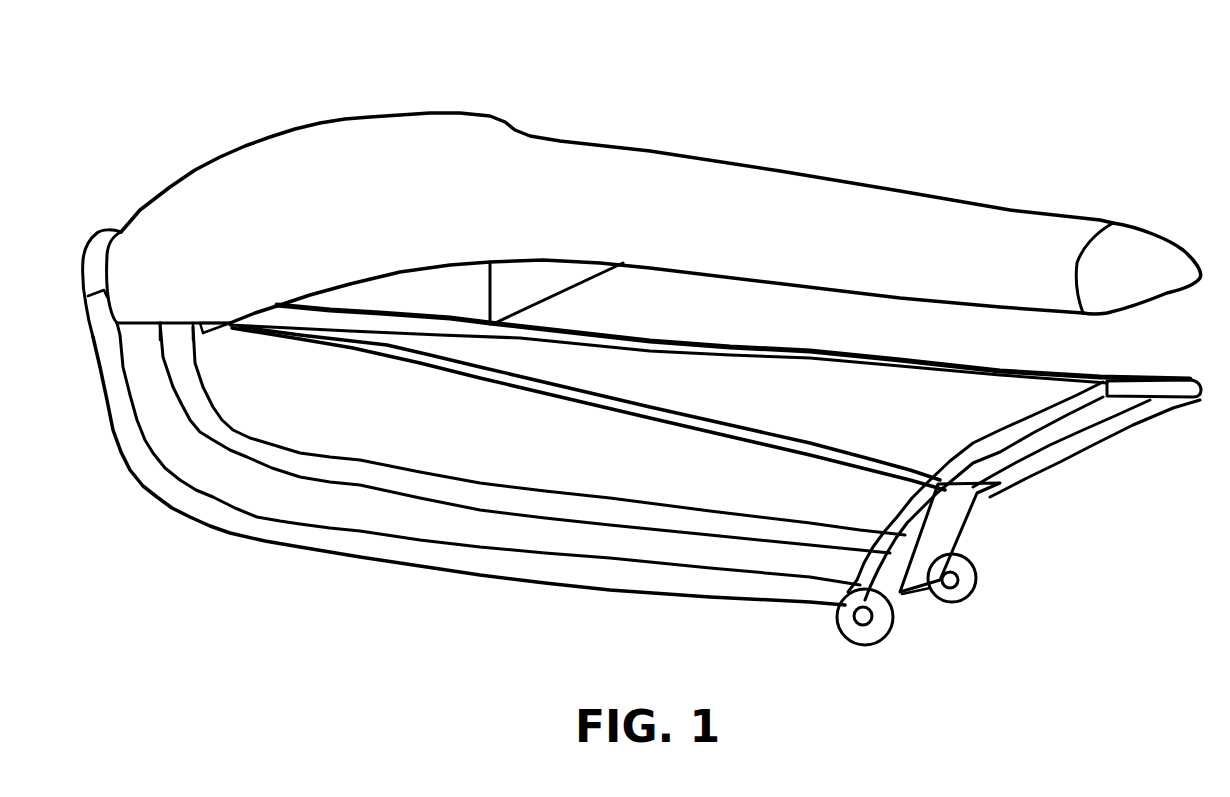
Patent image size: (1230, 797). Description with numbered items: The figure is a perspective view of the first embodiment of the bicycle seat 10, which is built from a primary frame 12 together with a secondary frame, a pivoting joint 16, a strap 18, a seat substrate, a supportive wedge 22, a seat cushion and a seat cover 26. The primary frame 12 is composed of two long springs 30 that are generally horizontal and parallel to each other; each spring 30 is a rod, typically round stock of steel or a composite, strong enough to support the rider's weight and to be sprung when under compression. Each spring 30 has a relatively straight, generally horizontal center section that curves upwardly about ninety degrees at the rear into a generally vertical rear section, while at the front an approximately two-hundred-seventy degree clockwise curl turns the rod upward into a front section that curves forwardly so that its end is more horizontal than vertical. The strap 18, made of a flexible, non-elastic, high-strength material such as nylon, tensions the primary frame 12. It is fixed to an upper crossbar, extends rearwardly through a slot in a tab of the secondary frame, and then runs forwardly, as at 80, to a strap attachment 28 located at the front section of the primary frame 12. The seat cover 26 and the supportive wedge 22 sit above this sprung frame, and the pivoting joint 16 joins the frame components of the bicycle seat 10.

The bicycle seat 10 is at (170, 122).
The primary frame 12 is at (211, 535).
The pivoting joint 16 is at (90, 238).
The strap 18 is at (782, 428).
The supportive wedge 22 is at (576, 287).
The seat cover 26 is at (864, 174).
The strap attachment 28 is at (762, 346).
The spring 30 is at (368, 466).
The forwardly extending strap portion 80 is at (598, 393).